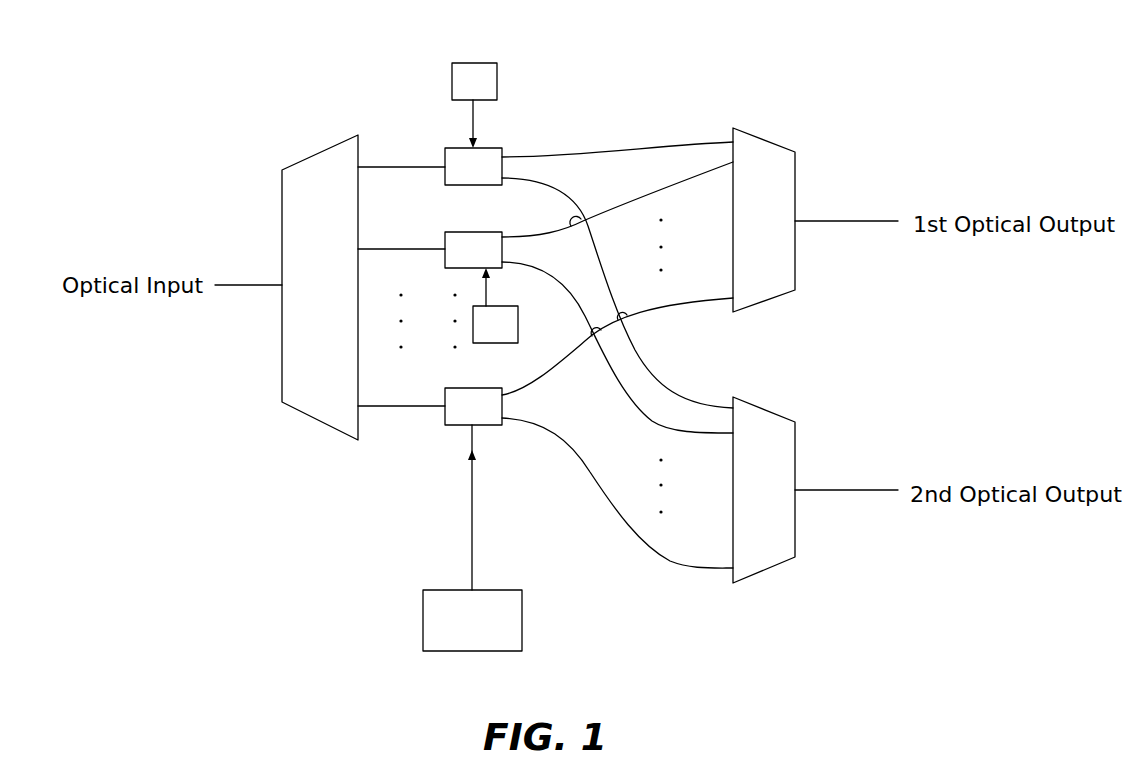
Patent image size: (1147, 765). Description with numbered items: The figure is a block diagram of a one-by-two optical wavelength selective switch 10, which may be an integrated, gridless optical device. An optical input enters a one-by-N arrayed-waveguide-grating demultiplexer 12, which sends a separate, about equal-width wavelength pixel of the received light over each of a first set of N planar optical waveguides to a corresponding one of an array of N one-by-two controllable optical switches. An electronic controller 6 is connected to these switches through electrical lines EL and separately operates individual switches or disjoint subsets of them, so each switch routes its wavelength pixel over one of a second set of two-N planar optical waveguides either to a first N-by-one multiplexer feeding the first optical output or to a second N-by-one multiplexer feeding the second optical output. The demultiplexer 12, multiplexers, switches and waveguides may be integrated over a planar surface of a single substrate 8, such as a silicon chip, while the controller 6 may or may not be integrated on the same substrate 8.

The 1×2 optical wavelength selective switch 10 is at (680, 68).
The substrate 8 is at (303, 520).
The 1×N optical AWG demultiplexer 12 is at (333, 301).
The electronic controller 6 is at (503, 337).
The electrical lines EL is at (471, 121).